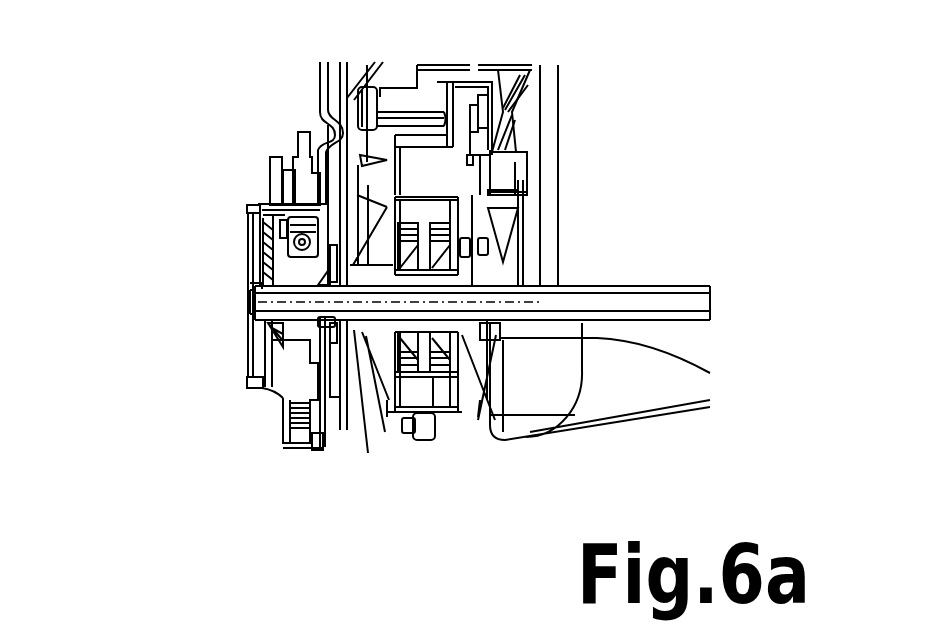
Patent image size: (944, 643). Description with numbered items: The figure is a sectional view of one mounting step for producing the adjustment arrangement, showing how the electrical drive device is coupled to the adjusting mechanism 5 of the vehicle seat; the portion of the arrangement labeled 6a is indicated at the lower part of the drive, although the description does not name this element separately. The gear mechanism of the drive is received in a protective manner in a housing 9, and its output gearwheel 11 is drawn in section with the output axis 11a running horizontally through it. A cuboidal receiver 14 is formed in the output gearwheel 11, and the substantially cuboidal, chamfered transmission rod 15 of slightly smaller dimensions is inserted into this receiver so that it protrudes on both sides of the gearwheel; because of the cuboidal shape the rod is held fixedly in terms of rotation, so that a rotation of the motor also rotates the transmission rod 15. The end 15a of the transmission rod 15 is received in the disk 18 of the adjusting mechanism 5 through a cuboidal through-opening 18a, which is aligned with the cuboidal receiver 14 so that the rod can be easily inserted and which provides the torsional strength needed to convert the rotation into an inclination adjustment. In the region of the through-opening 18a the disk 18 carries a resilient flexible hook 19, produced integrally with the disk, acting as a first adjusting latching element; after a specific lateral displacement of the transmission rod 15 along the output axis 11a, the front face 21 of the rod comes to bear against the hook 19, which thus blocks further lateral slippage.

The adjusting mechanism 5 is at (254, 187).
The housing portion 6a is at (394, 418).
The housing 9 is at (418, 417).
The output gearwheel 11 is at (430, 212).
The output axis 11a is at (522, 303).
The cuboidal receiver 14 is at (472, 286).
The transmission rod 15 is at (702, 318).
The end of the transmission rod 15a is at (226, 302).
The disk 18 is at (282, 358).
The cuboidal through-opening 18a is at (284, 323).
The resilient flexible hook 19 is at (250, 289).
The front face 21 is at (253, 297).